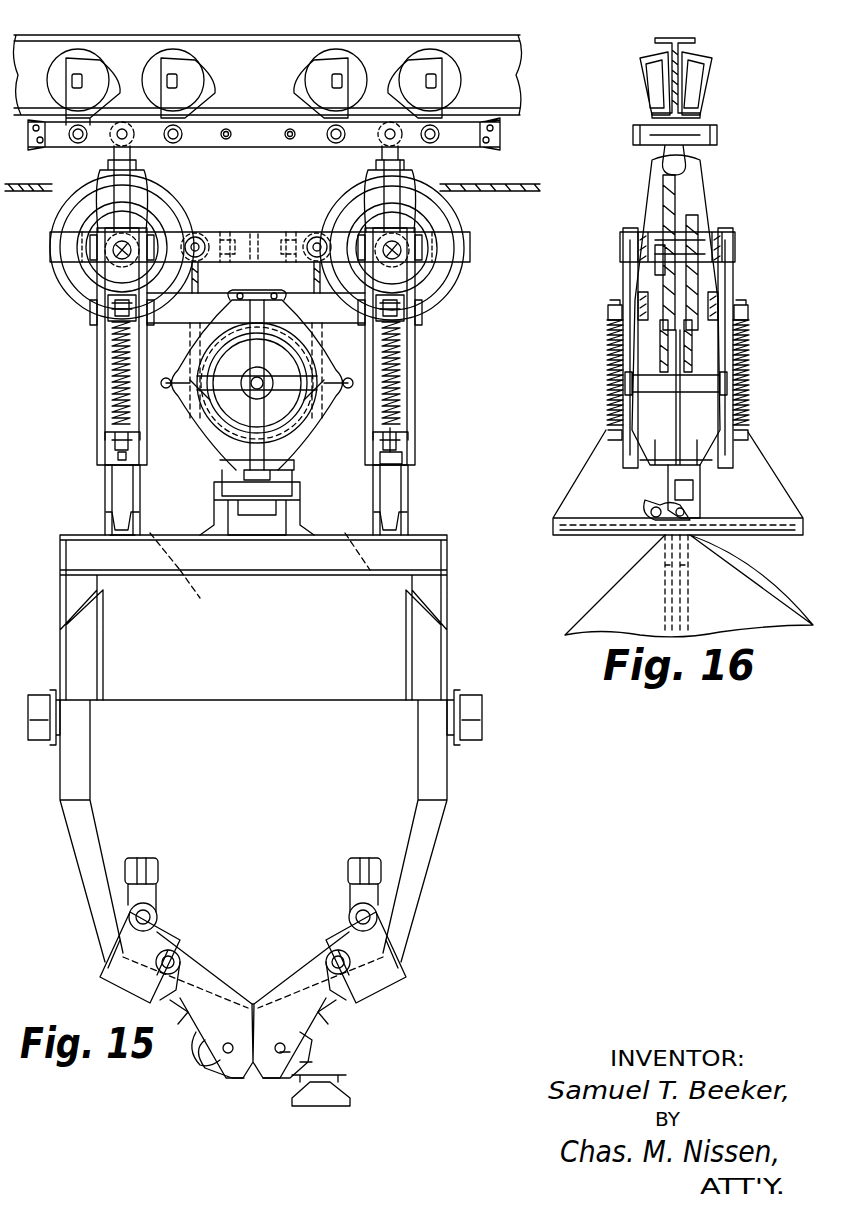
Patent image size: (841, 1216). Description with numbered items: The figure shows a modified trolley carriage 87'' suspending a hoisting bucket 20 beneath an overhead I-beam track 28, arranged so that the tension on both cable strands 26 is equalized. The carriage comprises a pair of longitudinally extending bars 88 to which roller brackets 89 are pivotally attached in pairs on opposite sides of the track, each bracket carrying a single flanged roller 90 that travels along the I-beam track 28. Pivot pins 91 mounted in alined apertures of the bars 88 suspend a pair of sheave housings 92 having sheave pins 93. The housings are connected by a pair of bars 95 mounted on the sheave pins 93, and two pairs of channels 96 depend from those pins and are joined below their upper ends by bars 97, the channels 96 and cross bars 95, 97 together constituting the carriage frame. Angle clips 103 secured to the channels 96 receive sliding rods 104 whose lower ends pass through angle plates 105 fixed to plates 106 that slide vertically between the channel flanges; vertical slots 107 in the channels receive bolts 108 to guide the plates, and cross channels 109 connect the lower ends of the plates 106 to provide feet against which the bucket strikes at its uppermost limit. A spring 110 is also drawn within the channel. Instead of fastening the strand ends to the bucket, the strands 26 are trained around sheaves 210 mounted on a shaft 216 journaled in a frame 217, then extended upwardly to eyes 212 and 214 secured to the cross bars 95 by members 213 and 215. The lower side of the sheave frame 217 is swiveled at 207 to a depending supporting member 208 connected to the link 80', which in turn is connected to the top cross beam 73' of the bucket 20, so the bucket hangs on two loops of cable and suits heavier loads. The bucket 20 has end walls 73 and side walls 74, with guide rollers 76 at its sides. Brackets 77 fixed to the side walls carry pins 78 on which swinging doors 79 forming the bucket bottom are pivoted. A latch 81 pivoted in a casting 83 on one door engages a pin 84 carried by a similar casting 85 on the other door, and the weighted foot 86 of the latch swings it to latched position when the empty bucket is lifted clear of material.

In FIG. 15, the bucket 20 is at (474, 636).
In FIG. 16, the bucket 20 is at (748, 578).
In FIG. 15, the strands 26 is at (38, 192).
In FIG. 15, the I-beam track 28 is at (500, 75).
In FIG. 16, the I-beam track 28 is at (682, 52).
In FIG. 15, the end walls 73 is at (231, 617).
In FIG. 15, the top cross beam 73' is at (269, 588).
In FIG. 16, the top cross beam 73' is at (630, 582).
In FIG. 15, the side walls 74 is at (152, 720).
In FIG. 15, the guide rollers 76 is at (40, 700).
In FIG. 15, the brackets 77 is at (118, 992).
In FIG. 15, the pins 78 is at (150, 912).
In FIG. 15, the swinging doors 79 is at (300, 1000).
In FIG. 16, the link 80' is at (726, 499).
In FIG. 15, the latch 81 is at (202, 1066).
In FIG. 15, the casting 83 is at (310, 1040).
In FIG. 15, the pin 84 is at (229, 1054).
In FIG. 15, the casting 85 is at (203, 1040).
In FIG. 15, the foot 86 is at (322, 1100).
In FIG. 15, the carriage 87'' is at (546, 140).
In FIG. 16, the carriage 87'' is at (715, 147).
In FIG. 15, the longitudinally extending bars 88 is at (250, 140).
In FIG. 15, the roller brackets 89 is at (200, 85).
In FIG. 15, the flanged roller 90 is at (70, 74).
In FIG. 15, the pivot pins 91 is at (118, 136).
In FIG. 15, the sheave housings 92 is at (160, 200).
In FIG. 15, the sheave pins 93 is at (118, 252).
In FIG. 15, the bars 95 is at (240, 245).
In FIG. 16, the bars 95 is at (643, 236).
In FIG. 15, the channels 96 is at (97, 405).
In FIG. 16, the channels 96 is at (624, 266).
In FIG. 15, the bars 97 is at (205, 302).
In FIG. 16, the bars 97 is at (640, 300).
In FIG. 15, the angle clips 103 is at (113, 308).
In FIG. 15, the rods 104 is at (132, 446).
In FIG. 15, the angle plates 105 is at (112, 444).
In FIG. 15, the plates 106 is at (118, 490).
In FIG. 15, the vertical slots 107 is at (404, 440).
In FIG. 15, the bolts 108 is at (410, 456).
In FIG. 15, the cross channels 109 is at (118, 515).
In FIG. 15, the spring 110 is at (112, 392).
In FIG. 15, the swivel 207 is at (266, 500).
In FIG. 16, the depending supporting member 208 is at (698, 490).
In FIG. 15, the sheaves 210 is at (215, 425).
In FIG. 16, the sheaves 210 is at (652, 336).
In FIG. 15, the eye 212 is at (198, 238).
In FIG. 15, the member 213 is at (226, 235).
In FIG. 15, the eye 214 is at (318, 238).
In FIG. 15, the member 215 is at (292, 235).
In FIG. 15, the shaft 216 is at (262, 388).
In FIG. 16, the shaft 216 is at (660, 388).
In FIG. 15, the frame 217 is at (325, 400).